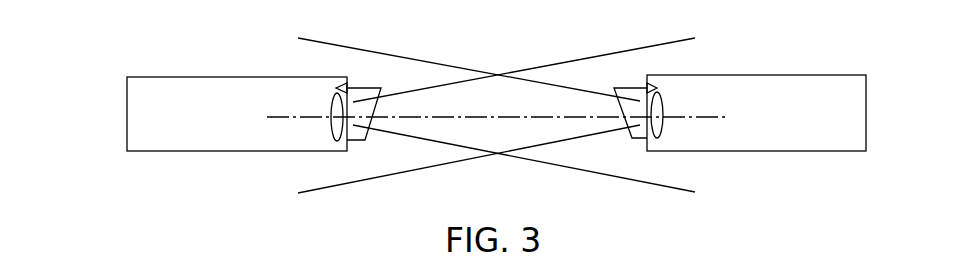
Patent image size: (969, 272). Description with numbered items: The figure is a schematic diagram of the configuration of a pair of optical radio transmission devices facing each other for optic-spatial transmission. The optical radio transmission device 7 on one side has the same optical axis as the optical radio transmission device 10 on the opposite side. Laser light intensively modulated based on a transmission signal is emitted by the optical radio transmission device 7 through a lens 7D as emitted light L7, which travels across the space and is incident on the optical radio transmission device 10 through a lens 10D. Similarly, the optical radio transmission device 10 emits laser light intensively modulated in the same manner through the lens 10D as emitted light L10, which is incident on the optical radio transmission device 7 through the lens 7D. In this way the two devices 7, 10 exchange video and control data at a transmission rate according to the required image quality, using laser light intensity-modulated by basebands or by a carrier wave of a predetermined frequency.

The optical radio transmission device 7 is at (233, 77).
The lens 7D is at (333, 100).
The optical radio transmission device 10 is at (765, 77).
The lens 10D is at (662, 100).
The emitted light L7 is at (405, 57).
The emitted light L10 is at (592, 57).